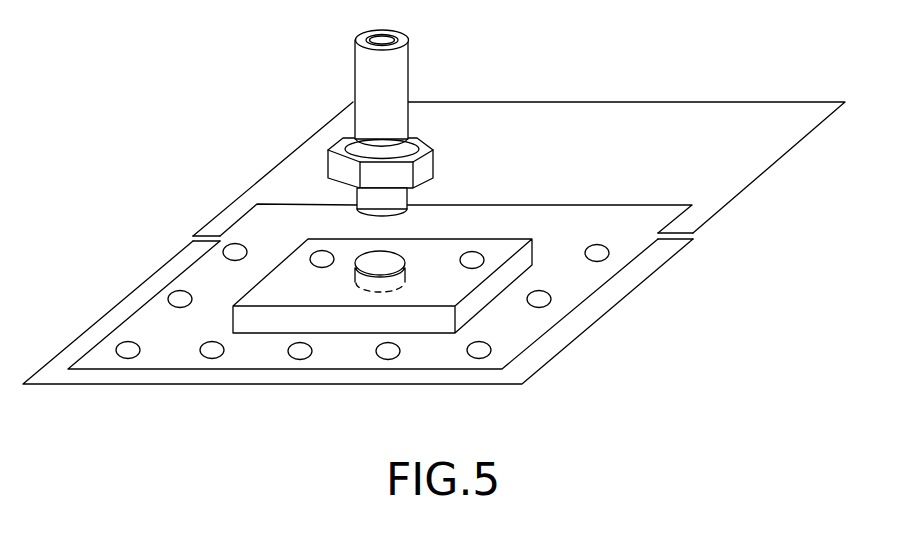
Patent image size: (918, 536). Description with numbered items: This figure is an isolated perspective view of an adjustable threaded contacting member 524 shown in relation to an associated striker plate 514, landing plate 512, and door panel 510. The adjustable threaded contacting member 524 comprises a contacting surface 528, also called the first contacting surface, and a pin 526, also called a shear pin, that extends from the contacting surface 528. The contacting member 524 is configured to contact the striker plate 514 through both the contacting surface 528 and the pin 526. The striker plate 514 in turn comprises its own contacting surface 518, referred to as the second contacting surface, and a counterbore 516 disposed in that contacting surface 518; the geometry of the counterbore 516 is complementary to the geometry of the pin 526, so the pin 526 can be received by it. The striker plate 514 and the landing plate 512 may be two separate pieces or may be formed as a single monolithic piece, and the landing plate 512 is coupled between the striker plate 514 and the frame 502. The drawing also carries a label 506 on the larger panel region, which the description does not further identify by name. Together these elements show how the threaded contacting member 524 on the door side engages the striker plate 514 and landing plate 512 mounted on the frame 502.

The frame 502 is at (434, 243).
The top layer 506 is at (581, 173).
The door panel 510 is at (689, 166).
The landing plate 512 is at (573, 241).
The striker plate 514 is at (315, 300).
The counterbore 516 is at (406, 261).
The contacting surface 518 is at (440, 286).
The adjustable threaded contacting member 524 is at (366, 82).
The pin 526 is at (405, 202).
The contacting surface 528 is at (353, 189).